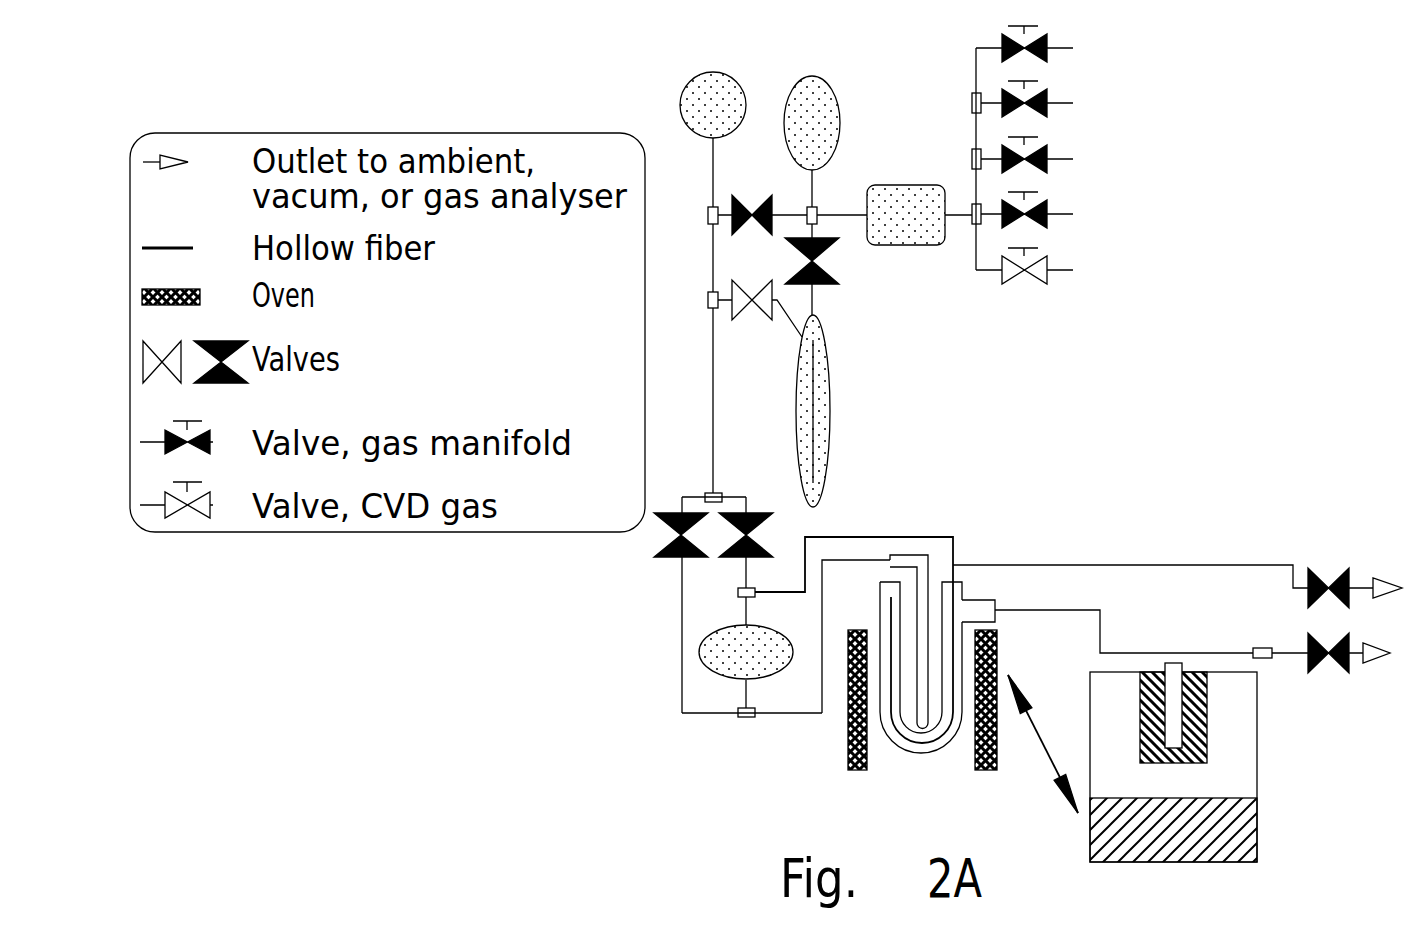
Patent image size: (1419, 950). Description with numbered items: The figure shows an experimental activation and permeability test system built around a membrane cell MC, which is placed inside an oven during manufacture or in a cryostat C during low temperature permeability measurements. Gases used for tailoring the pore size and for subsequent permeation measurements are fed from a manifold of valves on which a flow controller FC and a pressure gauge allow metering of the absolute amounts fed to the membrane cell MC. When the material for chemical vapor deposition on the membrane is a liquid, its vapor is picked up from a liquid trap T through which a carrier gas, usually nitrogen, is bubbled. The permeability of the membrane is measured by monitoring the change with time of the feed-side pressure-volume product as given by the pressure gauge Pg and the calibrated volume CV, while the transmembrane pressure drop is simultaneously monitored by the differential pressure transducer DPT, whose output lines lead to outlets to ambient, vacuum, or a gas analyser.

The calibrated volume CV is at (713, 105).
The pressure gauge Pg is at (812, 123).
The flow controller FC is at (906, 215).
The trap T is at (825, 411).
The differential pressure transducer DPT is at (746, 652).
The membrane cell MC is at (922, 680).
The cryostat C is at (1197, 762).